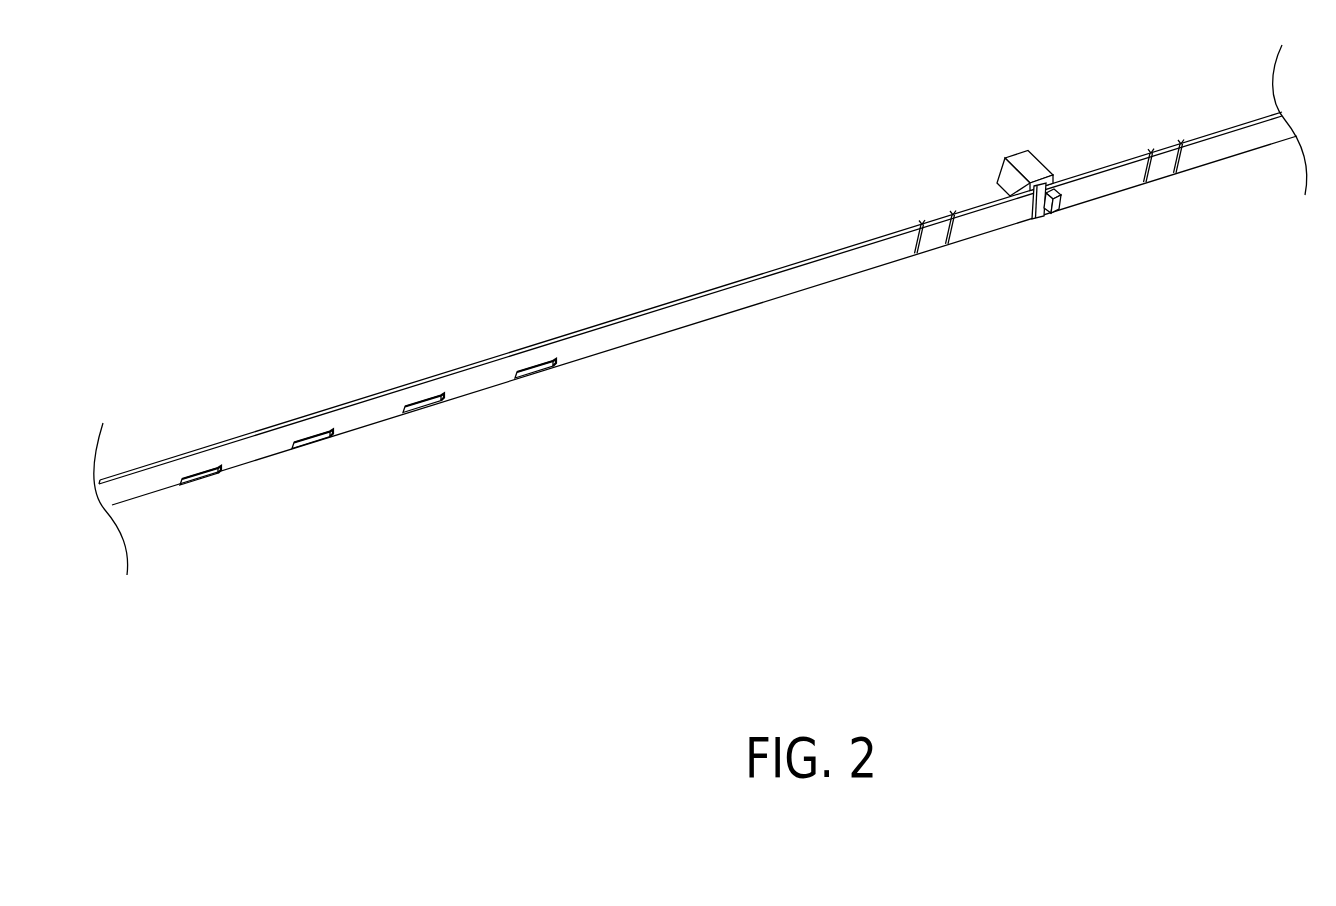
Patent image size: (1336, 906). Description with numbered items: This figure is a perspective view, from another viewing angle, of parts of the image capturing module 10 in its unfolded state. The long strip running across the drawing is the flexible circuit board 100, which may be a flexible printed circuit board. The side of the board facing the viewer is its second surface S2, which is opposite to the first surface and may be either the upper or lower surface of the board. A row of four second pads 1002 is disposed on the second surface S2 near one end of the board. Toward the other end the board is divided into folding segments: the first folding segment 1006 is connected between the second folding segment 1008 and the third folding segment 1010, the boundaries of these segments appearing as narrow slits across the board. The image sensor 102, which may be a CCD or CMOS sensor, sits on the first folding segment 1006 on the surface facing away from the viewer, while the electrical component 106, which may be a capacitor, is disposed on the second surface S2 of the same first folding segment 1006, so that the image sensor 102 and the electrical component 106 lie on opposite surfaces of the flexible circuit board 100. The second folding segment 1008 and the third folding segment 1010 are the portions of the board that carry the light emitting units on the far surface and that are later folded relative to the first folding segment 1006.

The image capturing module 10 is at (419, 128).
The flexible circuit board 100 is at (678, 297).
The second pads 1002 is at (425, 408).
The third folding segment 1010 is at (992, 200).
The image sensor 102 is at (1033, 163).
The first folding segment 1006 is at (1042, 217).
The electrical component 106 is at (1057, 215).
The second folding segment 1008 is at (1117, 163).
The second surface S2 is at (747, 295).